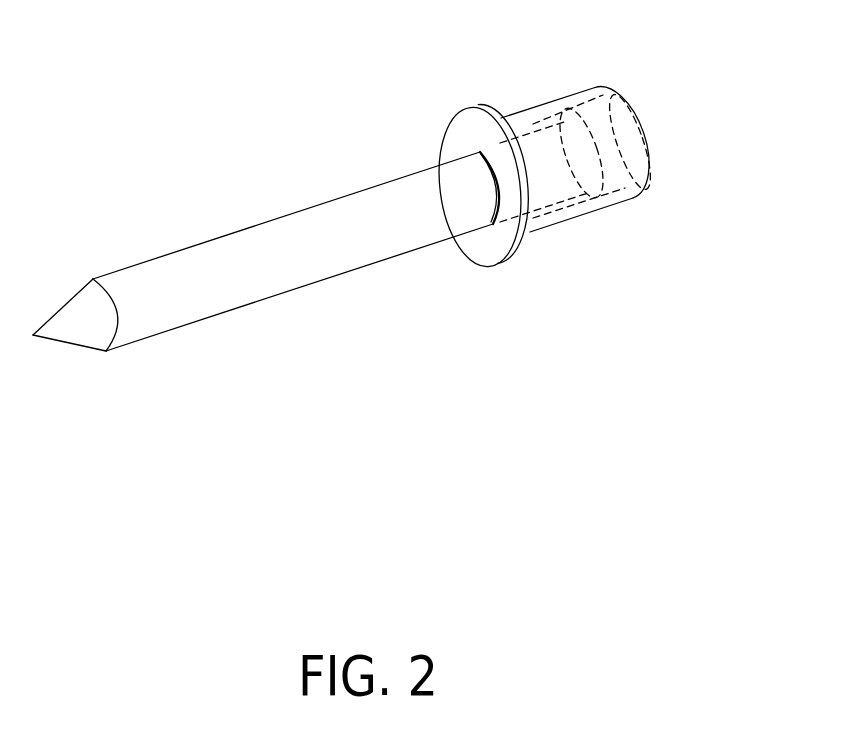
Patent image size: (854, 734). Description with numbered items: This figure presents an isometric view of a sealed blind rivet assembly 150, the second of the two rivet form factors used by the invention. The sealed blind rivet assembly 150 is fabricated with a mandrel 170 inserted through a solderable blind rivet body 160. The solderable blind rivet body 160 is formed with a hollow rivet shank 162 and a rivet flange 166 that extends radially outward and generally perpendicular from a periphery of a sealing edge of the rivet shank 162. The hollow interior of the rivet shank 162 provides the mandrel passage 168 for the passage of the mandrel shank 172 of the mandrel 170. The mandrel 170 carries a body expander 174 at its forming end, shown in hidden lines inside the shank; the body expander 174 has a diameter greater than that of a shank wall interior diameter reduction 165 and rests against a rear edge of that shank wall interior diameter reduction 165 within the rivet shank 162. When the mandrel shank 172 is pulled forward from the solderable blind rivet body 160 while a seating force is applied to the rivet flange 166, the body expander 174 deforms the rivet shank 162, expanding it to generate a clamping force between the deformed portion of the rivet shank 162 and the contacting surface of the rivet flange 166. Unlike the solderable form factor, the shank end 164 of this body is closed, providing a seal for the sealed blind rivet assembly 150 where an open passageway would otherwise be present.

The sealed blind rivet assembly 150 is at (234, 124).
The solderable blind rivet body 160 is at (560, 279).
The rivet shank 162 is at (577, 212).
The shank end 164 is at (647, 132).
The shank wall interior diameter reduction 165 is at (592, 133).
The rivet flange 166 is at (490, 247).
The mandrel passage 168 is at (474, 152).
The mandrel 170 is at (304, 322).
The mandrel shank 172 is at (177, 265).
The body expander 174 is at (644, 194).